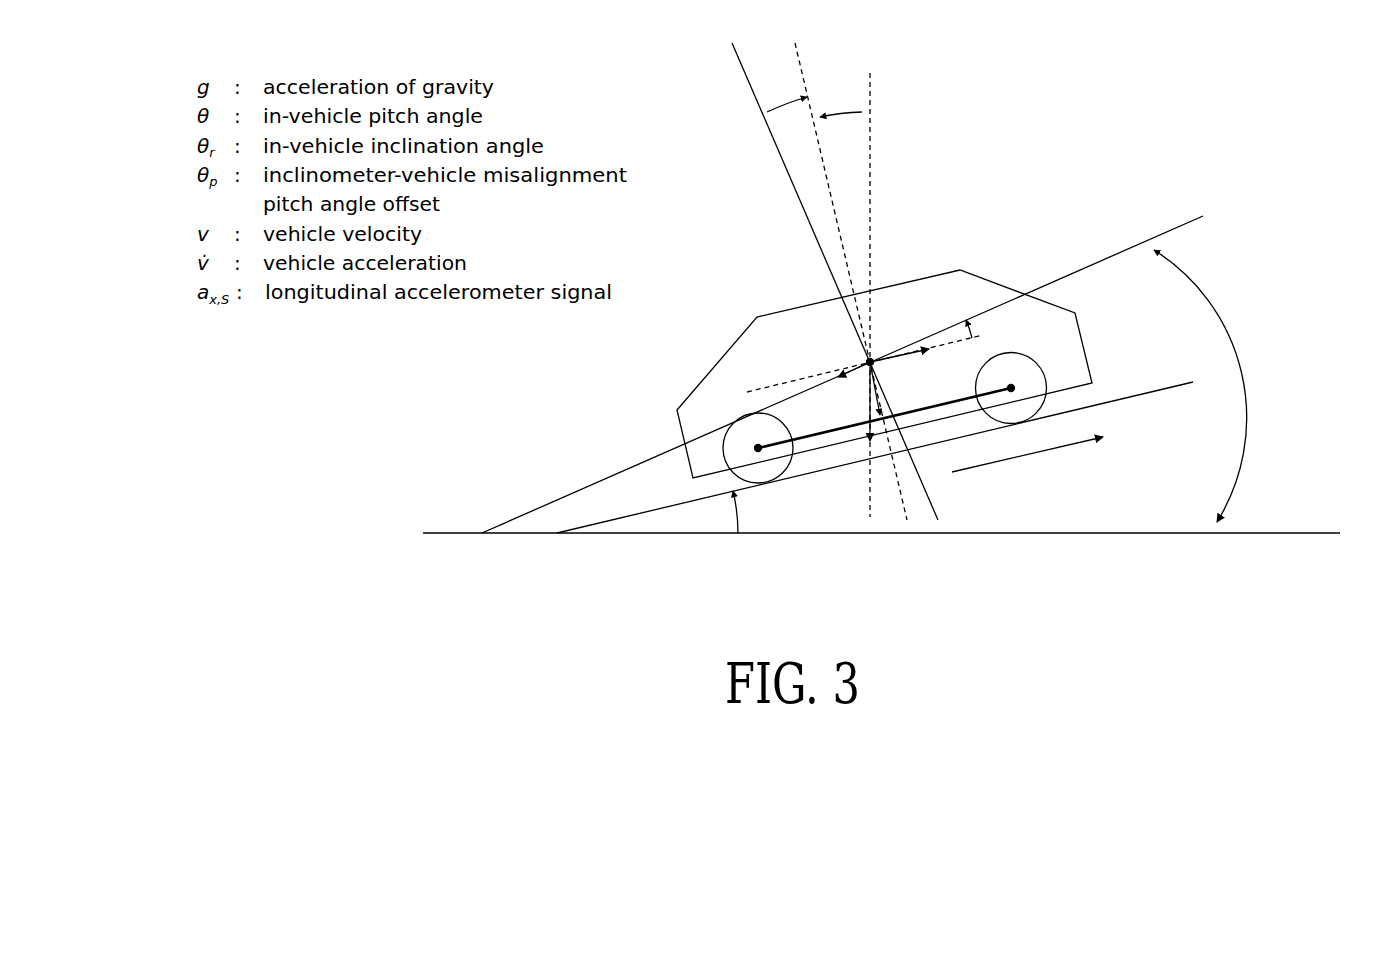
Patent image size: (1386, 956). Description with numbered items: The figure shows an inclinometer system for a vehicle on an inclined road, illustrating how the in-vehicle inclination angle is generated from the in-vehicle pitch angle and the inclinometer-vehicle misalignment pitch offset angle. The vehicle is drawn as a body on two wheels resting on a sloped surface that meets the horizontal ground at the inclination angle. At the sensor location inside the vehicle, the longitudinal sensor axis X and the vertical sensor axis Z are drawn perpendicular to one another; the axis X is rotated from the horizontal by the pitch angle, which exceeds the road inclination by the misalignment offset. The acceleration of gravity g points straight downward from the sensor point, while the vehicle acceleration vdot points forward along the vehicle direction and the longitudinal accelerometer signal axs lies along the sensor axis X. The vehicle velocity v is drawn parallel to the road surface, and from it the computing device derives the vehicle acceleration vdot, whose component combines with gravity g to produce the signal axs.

The longitudinal sensor axis X is at (842, 364).
The vertical sensor axis Z is at (823, 281).
The longitudinal accelerometer signal axs is at (846, 381).
The vehicle acceleration vdot is at (906, 360).
The acceleration of gravity g is at (865, 412).
The vehicle velocity v is at (1027, 461).